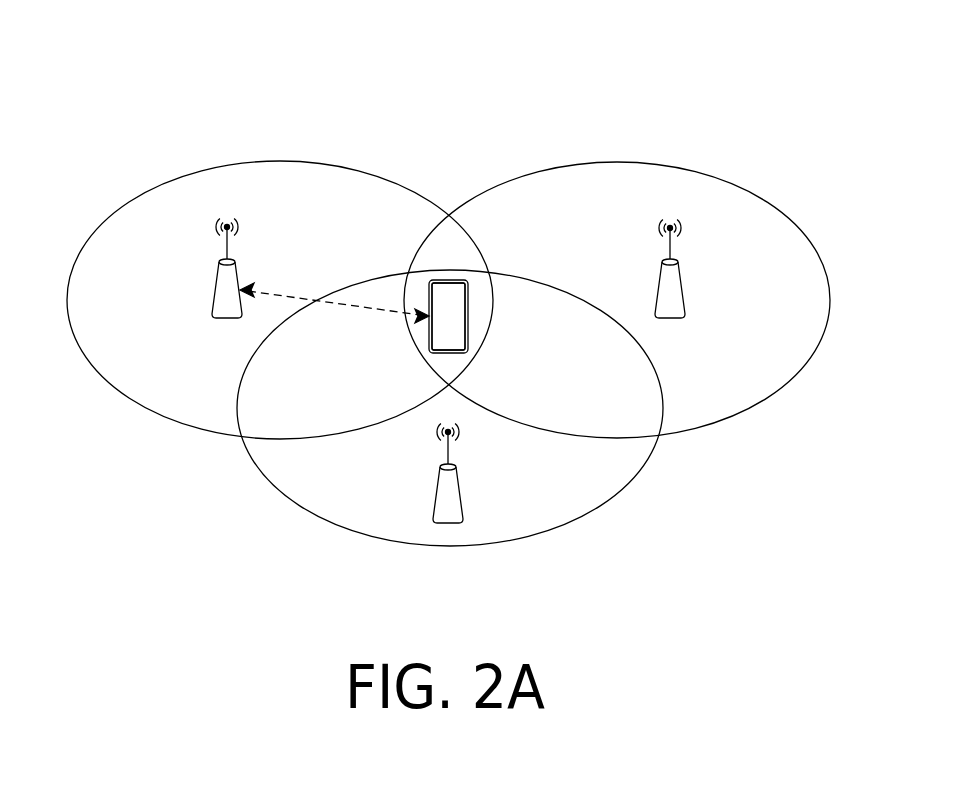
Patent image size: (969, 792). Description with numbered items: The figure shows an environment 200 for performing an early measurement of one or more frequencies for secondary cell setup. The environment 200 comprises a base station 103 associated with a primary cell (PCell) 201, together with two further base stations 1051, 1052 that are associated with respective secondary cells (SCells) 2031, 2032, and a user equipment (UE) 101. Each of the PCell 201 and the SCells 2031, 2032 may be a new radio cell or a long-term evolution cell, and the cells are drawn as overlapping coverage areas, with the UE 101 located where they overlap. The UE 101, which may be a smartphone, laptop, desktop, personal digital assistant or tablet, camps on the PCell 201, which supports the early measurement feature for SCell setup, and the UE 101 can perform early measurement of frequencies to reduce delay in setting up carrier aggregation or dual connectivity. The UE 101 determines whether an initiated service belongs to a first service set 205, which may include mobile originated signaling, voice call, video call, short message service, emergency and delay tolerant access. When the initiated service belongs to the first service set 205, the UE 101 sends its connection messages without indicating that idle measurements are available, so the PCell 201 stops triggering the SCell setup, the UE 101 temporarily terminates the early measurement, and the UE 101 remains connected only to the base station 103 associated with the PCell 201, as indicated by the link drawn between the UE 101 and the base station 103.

The environment 200 is at (673, 72).
The primary cell (PCell) 201 is at (278, 160).
The secondary cell (SCell) 2031 is at (612, 160).
The secondary cell (SCell) 2032 is at (449, 547).
The base station 103 is at (213, 288).
The base station 1051 is at (684, 283).
The base station 1052 is at (462, 486).
The user equipment (UE) 101 is at (446, 280).
The first service set 205 is at (352, 316).